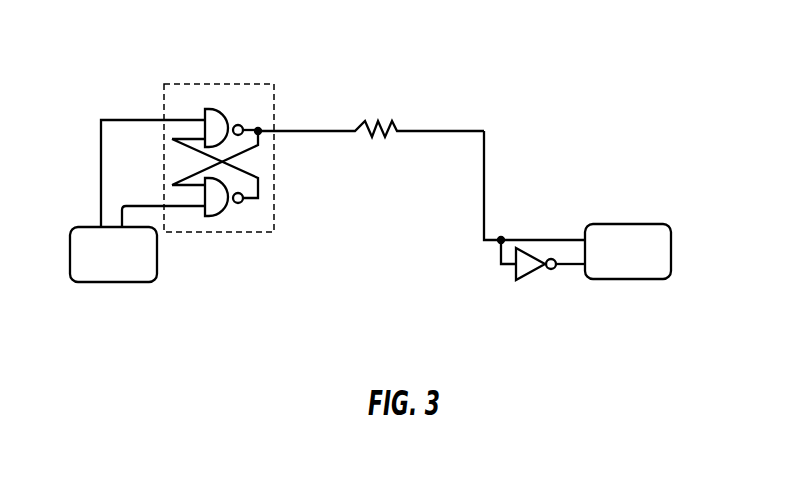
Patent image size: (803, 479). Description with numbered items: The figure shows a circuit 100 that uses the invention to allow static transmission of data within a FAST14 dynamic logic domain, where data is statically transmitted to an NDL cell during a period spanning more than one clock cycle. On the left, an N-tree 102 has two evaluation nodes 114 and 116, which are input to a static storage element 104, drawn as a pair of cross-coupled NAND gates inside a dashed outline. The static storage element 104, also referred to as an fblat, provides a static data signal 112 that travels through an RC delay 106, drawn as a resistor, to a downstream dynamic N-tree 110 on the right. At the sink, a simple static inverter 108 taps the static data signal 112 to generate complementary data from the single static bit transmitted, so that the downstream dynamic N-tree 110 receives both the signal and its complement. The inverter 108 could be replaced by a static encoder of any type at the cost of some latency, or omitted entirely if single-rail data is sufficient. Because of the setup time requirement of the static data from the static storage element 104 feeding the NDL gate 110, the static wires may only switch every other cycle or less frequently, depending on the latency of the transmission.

The circuit 100 is at (614, 62).
The N-tree 102 is at (127, 282).
The static storage element 104 is at (264, 232).
The RC delay 106 is at (395, 125).
The static inverter 108 is at (517, 280).
The downstream dynamic N-tree 110 is at (671, 256).
The static data signal 112 is at (484, 167).
The evaluation node 114 is at (101, 163).
The evaluation node 116 is at (138, 206).